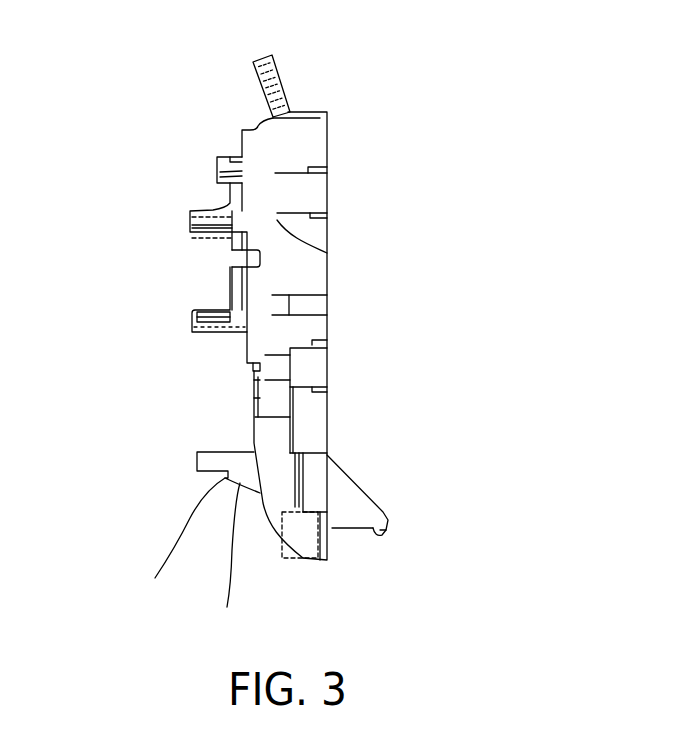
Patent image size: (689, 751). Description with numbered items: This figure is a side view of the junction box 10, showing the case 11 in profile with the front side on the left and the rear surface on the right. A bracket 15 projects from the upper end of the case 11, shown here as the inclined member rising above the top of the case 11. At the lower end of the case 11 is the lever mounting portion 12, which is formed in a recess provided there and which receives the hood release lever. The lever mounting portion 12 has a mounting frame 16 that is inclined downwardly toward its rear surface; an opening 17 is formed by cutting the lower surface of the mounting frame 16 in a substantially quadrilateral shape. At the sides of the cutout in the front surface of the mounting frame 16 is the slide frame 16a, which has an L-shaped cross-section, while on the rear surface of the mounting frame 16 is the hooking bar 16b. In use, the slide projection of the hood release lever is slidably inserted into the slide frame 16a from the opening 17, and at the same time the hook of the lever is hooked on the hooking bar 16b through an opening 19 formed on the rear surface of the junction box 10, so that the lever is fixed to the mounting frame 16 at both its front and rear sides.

The junction box 10 is at (232, 122).
The case 11 is at (247, 353).
The lever mounting portion 12 is at (192, 478).
The bracket 15 is at (283, 82).
The mounting frame 16 is at (226, 560).
The slide frame 16a is at (174, 540).
The hooking bar 16b is at (384, 535).
The opening 17 is at (342, 528).
The opening 19 is at (355, 493).